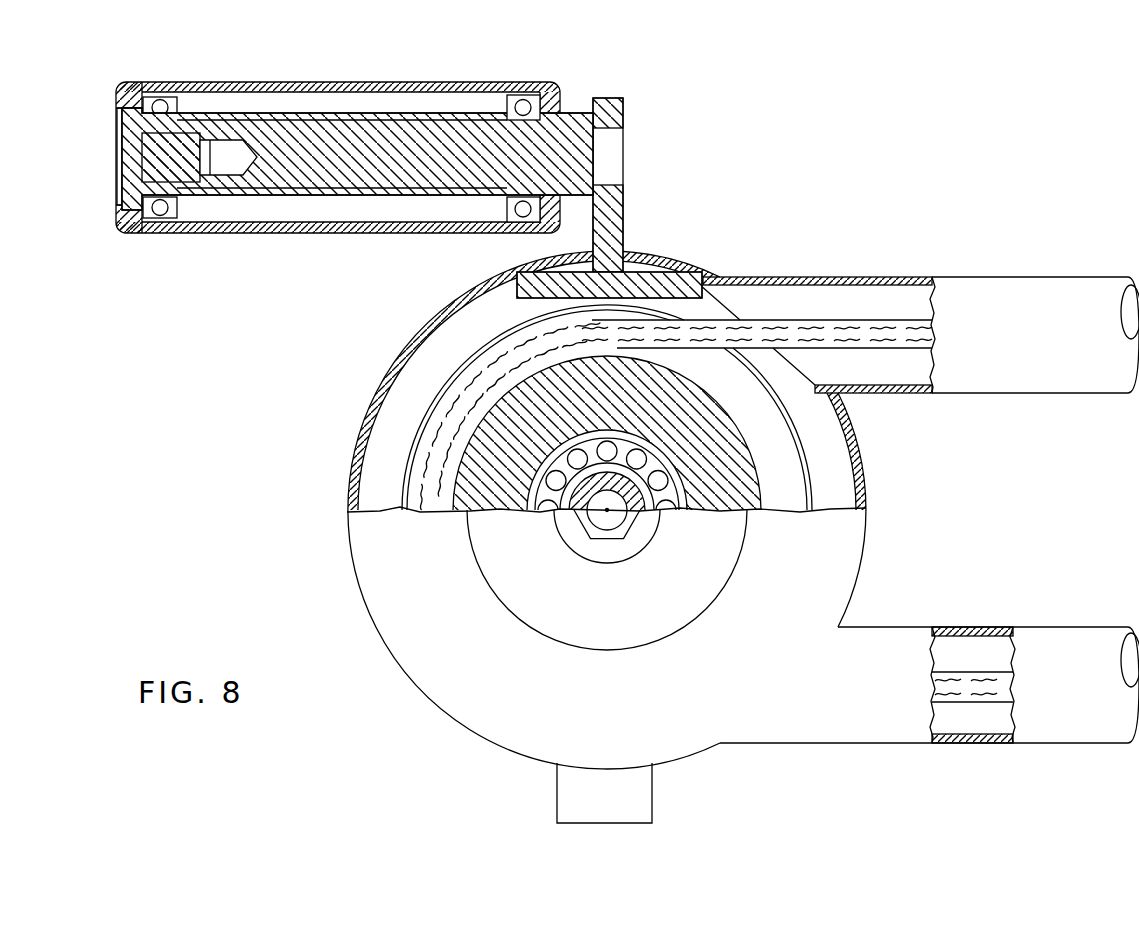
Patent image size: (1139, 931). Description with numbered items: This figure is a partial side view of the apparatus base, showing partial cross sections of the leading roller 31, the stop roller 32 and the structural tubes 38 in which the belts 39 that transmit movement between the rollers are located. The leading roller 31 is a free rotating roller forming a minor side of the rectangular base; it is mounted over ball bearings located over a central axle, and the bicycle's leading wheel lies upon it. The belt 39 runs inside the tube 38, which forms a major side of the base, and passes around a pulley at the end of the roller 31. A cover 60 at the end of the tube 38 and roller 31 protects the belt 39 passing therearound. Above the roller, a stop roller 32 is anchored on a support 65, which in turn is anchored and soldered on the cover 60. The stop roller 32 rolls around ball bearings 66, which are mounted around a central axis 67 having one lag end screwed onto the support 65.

The leading roller 31 is at (407, 457).
The stop roller 32 is at (218, 82).
The tube 38 is at (998, 277).
The belt 39 is at (793, 322).
The cover 60 is at (862, 547).
The support 65 is at (628, 205).
The ball bearings 66 is at (528, 97).
The central axis 67 is at (328, 150).